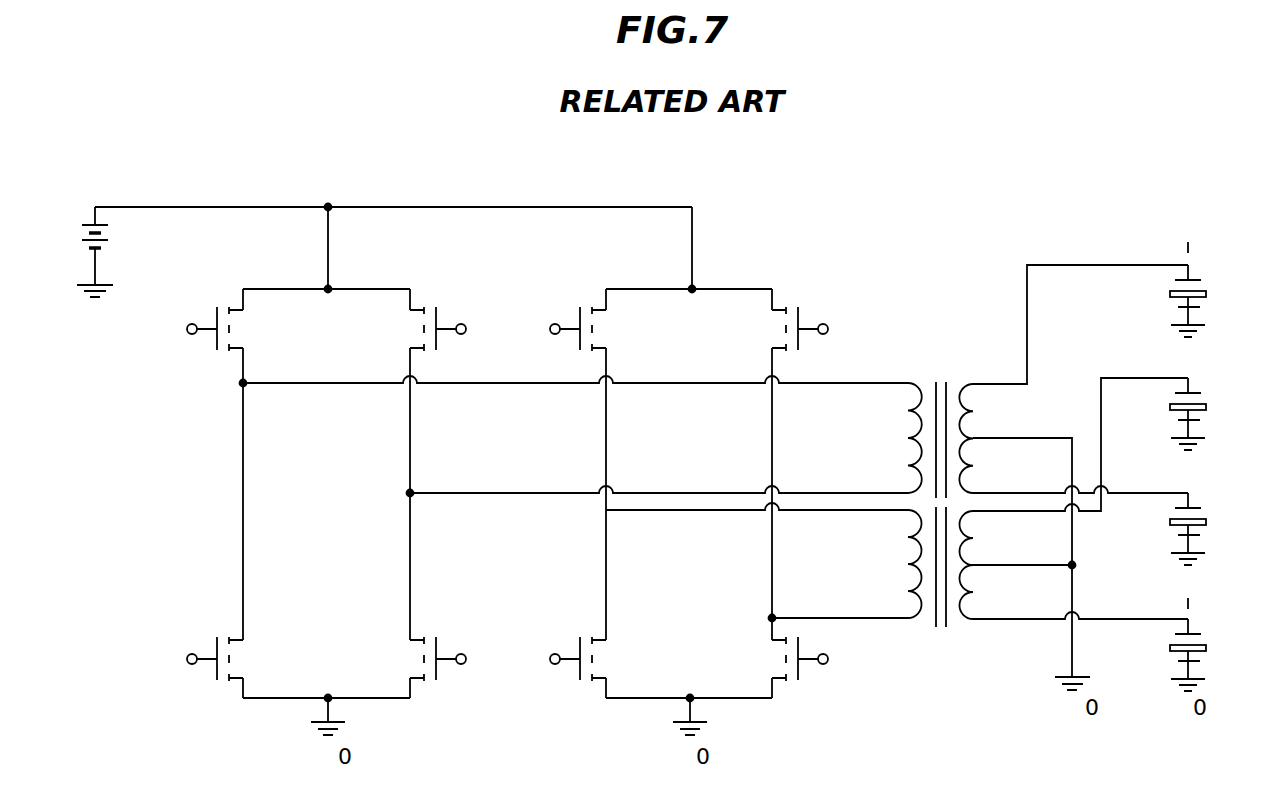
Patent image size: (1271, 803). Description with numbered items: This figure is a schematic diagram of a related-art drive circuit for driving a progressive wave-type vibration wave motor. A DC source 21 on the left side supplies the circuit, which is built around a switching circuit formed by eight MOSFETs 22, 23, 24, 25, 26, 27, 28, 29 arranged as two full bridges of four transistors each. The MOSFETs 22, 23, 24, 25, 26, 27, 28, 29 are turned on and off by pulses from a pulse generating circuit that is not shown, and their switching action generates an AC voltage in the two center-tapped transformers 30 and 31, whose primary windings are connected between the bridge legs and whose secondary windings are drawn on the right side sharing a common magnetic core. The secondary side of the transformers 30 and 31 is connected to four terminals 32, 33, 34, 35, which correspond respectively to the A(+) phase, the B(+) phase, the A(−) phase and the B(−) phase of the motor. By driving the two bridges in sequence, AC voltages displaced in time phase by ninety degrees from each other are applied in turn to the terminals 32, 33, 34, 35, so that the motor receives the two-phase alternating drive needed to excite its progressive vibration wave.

The DC power supply 21 is at (110, 229).
The MOSFET 22 is at (218, 307).
The MOSFET 23 is at (435, 308).
The MOSFET 24 is at (230, 637).
The MOSFET 25 is at (423, 637).
The MOSFET 26 is at (582, 308).
The MOSFET 27 is at (800, 308).
The MOSFET 28 is at (592, 637).
The MOSFET 29 is at (788, 637).
The center-tapped transformer 30 is at (940, 509).
The center-tapped transformer 31 is at (946, 627).
The terminal 32 is at (1206, 294).
The terminal 33 is at (1206, 407).
The terminal 34 is at (1206, 522).
The terminal 35 is at (1206, 648).